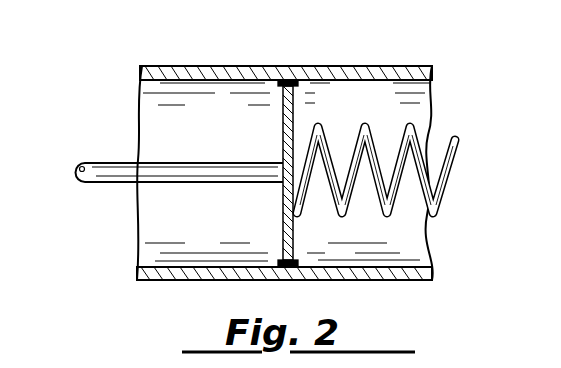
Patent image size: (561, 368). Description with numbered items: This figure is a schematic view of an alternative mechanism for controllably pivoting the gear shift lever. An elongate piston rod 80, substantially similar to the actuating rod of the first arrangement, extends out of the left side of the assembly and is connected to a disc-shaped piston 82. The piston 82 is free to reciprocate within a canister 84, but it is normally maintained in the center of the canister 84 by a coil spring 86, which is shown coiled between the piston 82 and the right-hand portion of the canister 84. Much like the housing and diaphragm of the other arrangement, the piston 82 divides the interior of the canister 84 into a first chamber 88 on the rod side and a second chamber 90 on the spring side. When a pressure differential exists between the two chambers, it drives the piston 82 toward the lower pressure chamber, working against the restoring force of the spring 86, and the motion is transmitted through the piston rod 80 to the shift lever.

The piston rod 80 is at (110, 163).
The piston 82 is at (283, 226).
The canister 84 is at (338, 66).
The coil spring 86 is at (448, 182).
The first chamber 88 is at (200, 120).
The second chamber 90 is at (348, 101).